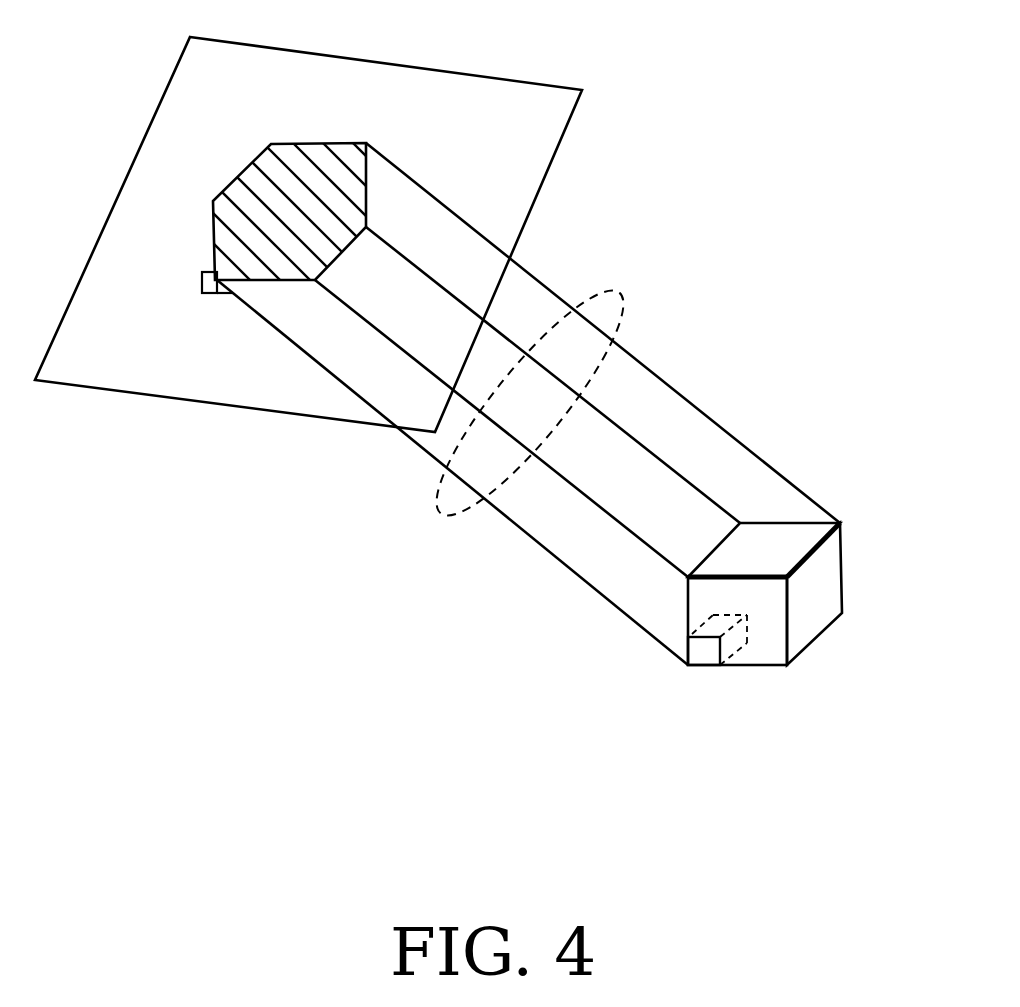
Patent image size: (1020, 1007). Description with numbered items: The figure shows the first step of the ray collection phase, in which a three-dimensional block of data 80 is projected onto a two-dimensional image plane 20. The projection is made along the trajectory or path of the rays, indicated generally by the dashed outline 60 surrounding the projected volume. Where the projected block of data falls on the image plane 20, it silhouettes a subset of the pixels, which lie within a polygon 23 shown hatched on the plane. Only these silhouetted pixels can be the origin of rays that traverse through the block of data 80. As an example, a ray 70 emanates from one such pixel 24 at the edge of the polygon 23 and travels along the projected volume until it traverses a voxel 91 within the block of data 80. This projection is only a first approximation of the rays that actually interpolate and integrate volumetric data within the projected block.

The image plane 20 is at (452, 68).
The polygon 23 is at (287, 143).
The pixel 24 is at (202, 282).
The trajectory of the rays 60 is at (620, 293).
The ray 70 is at (570, 572).
The block of data 80 is at (842, 552).
The voxel 91 is at (703, 667).